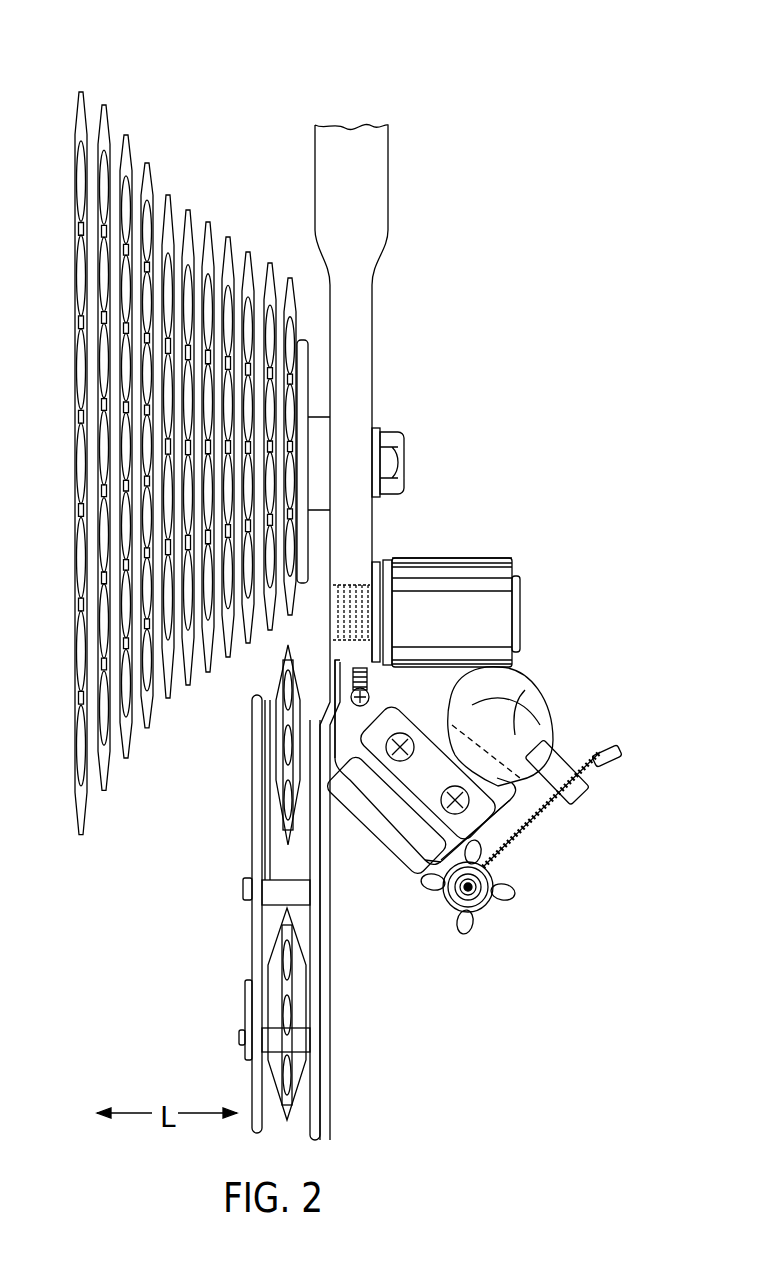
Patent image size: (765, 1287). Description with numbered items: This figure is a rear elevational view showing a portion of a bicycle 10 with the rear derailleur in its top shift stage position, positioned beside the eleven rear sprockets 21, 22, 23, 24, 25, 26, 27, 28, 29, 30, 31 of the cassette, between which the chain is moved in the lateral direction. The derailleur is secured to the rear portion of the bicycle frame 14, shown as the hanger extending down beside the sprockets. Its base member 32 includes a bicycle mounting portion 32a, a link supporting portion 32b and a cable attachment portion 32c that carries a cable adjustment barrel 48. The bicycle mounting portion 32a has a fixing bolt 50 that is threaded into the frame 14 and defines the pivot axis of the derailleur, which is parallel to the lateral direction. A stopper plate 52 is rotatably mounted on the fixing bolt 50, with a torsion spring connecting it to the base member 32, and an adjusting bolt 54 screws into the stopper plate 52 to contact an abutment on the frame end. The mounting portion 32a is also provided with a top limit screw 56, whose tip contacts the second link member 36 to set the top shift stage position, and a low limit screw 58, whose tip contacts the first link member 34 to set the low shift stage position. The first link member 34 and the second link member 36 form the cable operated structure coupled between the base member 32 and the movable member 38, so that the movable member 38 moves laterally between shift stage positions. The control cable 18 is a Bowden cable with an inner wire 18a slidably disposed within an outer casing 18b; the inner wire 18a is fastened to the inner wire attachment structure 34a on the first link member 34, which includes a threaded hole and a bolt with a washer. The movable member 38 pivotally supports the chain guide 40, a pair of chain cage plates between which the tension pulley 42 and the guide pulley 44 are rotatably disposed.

The bicycle 10 is at (417, 173).
The bicycle frame 14 is at (373, 352).
The control cable 18 is at (590, 870).
The inner wire 18a is at (520, 838).
The outer casing 18b is at (480, 895).
The rear sprocket 21 is at (290, 278).
The rear sprocket 22 is at (270, 263).
The rear sprocket 23 is at (248, 252).
The rear sprocket 24 is at (228, 237).
The rear sprocket 25 is at (208, 222).
The rear sprocket 26 is at (188, 210).
The rear sprocket 27 is at (168, 195).
The rear sprocket 28 is at (147, 163).
The rear sprocket 29 is at (126, 135).
The rear sprocket 30 is at (104, 105).
The rear sprocket 31 is at (81, 92).
The base member 32 is at (478, 727).
The bicycle mounting portion 32a is at (457, 558).
The link supporting portion 32b is at (520, 815).
The cable attachment portion 32c is at (443, 870).
The first link member 34 is at (557, 733).
The inner wire attachment structure 34a is at (585, 752).
The second link member 36 is at (378, 862).
The movable member 38 is at (340, 728).
The chain guide 40 is at (252, 930).
The tension pulley 42 is at (298, 1093).
The guide pulley 44 is at (287, 823).
The cable adjustment barrel 48 is at (468, 920).
The fixing bolt 50 is at (520, 595).
The stopper plate 52 is at (380, 612).
The adjusting bolt 54 is at (400, 657).
The top limit screw 56 is at (365, 800).
The low limit screw 58 is at (430, 830).